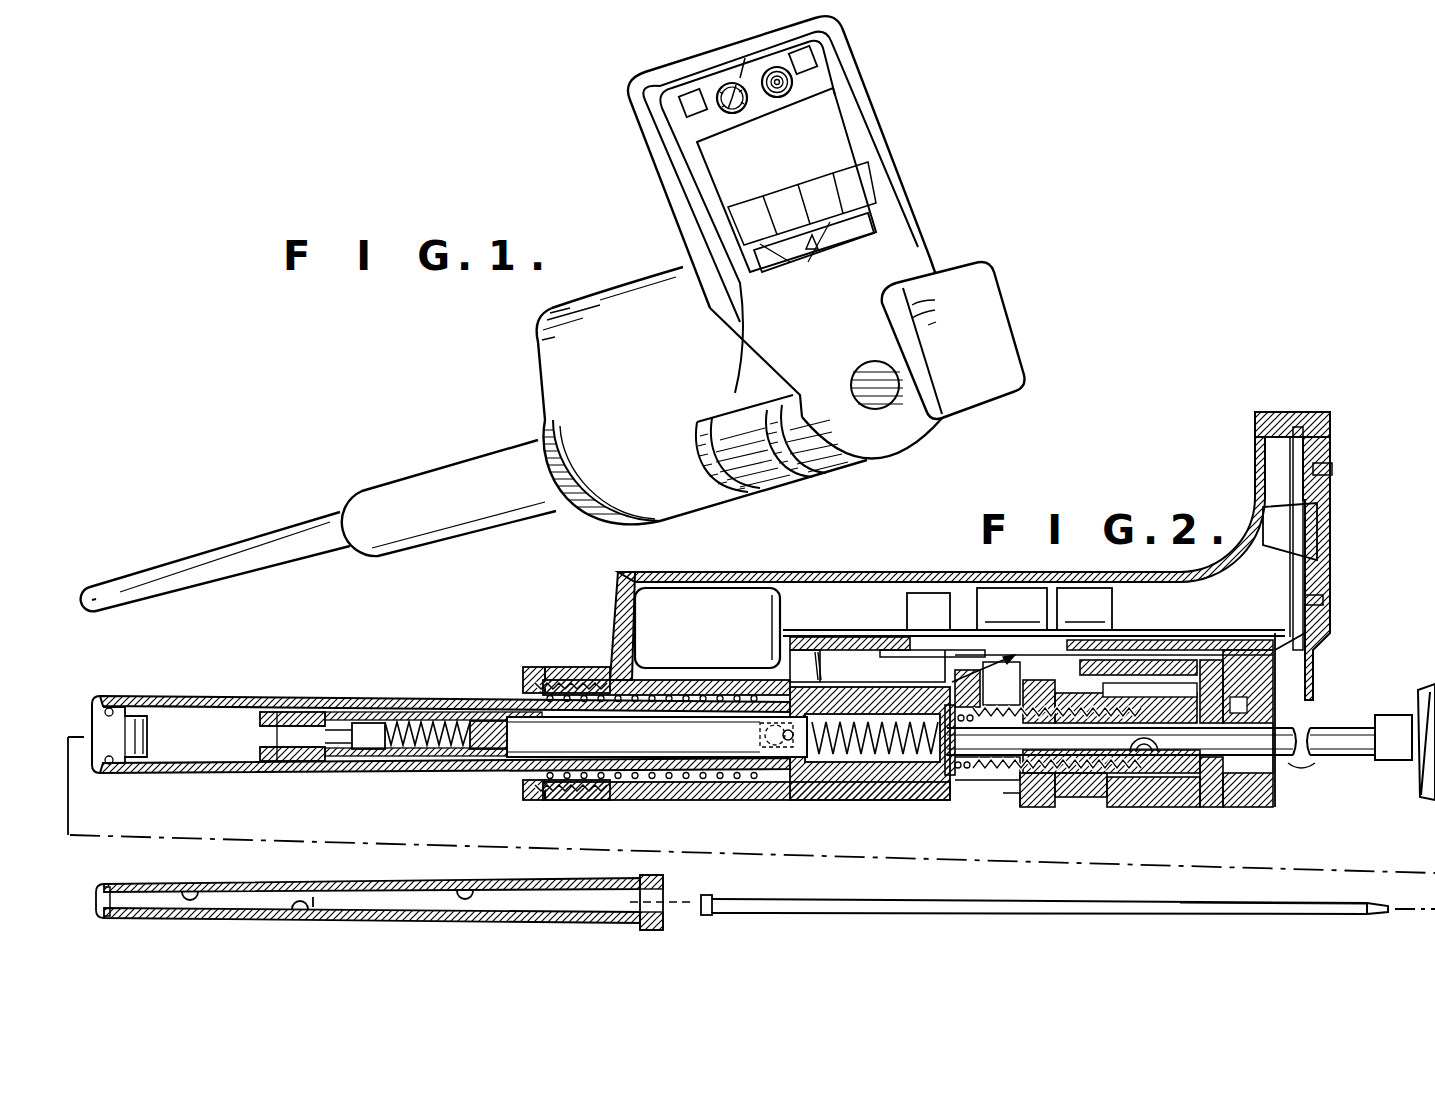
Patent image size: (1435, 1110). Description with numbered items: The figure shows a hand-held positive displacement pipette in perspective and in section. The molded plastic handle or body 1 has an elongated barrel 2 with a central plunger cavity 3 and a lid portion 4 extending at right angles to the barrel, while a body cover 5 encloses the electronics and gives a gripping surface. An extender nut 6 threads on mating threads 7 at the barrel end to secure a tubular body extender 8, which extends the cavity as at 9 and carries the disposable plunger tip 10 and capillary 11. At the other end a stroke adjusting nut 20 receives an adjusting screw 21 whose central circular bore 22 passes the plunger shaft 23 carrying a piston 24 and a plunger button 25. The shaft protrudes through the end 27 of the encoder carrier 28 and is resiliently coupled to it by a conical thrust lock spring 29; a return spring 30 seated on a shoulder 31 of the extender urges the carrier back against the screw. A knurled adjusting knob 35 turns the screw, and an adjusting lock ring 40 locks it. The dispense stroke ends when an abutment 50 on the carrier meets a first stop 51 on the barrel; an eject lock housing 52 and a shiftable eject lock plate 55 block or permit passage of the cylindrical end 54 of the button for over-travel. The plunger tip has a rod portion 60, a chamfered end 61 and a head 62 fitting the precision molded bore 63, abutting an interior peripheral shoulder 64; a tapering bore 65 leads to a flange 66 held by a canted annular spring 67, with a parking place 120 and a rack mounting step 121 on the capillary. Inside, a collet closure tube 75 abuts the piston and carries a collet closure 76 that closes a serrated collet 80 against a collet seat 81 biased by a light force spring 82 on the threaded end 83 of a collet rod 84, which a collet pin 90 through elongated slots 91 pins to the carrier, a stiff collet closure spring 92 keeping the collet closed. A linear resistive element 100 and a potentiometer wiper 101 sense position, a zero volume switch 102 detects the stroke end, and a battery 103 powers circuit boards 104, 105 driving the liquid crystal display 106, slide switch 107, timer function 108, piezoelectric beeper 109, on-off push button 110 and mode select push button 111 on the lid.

In FIG. 1, the handle or body 1 is at (512, 340).
In FIG. 1, the barrel 2 is at (687, 500).
In FIG. 2, the barrel 2 is at (738, 790).
In FIG. 2, the central plunger cavity 3 is at (720, 778).
In FIG. 1, the lid portion 4 is at (907, 208).
In FIG. 2, the lid portion 4 is at (1315, 600).
In FIG. 1, the body cover 5 is at (615, 293).
In FIG. 2, the body cover 5 is at (840, 574).
In FIG. 2, the extender nut 6 is at (540, 668).
In FIG. 2, the mating threads 7 is at (575, 668).
In FIG. 1, the body extender 8 is at (437, 482).
In FIG. 2, the body extender 8 is at (210, 697).
In FIG. 2, the extended plunger cavity 9 is at (181, 751).
In FIG. 2, the plunger tip 10 is at (797, 899).
In FIG. 1, the capillary 11 is at (222, 555).
In FIG. 2, the capillary 11 is at (262, 886).
In FIG. 2, the stroke adjusting nut 20 is at (1030, 808).
In FIG. 2, the adjusting screw 21 is at (1110, 772).
In FIG. 2, the central circular bore 22 is at (1160, 777).
In FIG. 2, the plunger shaft 23 is at (1353, 758).
In FIG. 2, the piston 24 is at (948, 762).
In FIG. 1, the plunger button 25 is at (995, 307).
In FIG. 2, the plunger button 25 is at (1418, 765).
In FIG. 2, the end of encoder carrier 27 is at (975, 770).
In FIG. 2, the encoder carrier 28 is at (850, 775).
In FIG. 2, the conical thrust lock spring 29 is at (960, 768).
In FIG. 2, the return spring 30 is at (630, 778).
In FIG. 2, the shoulder 31 is at (543, 790).
In FIG. 2, the knurled adjusting knob 35 is at (1147, 808).
In FIG. 2, the adjusting lock ring 40 is at (1072, 808).
In FIG. 2, the abutment 50 is at (944, 702).
In FIG. 2, the first stop 51 is at (811, 676).
In FIG. 2, the eject lock housing 52 is at (1210, 795).
In FIG. 2, the cylindrical end of plunger button 54 is at (1397, 715).
In FIG. 2, the eject lock plate 55 is at (1262, 808).
In FIG. 2, the rod portion 60 is at (1230, 914).
In FIG. 2, the chamfered end 61 is at (1385, 914).
In FIG. 2, the plunger tip head 62 is at (704, 916).
In FIG. 2, the precision molded bore 63 is at (190, 888).
In FIG. 2, the interior peripheral shoulder 64 is at (108, 886).
In FIG. 2, the tapering bore 65 is at (455, 892).
In FIG. 2, the flange 66 is at (640, 924).
In FIG. 2, the canted annular spring 67 is at (110, 705).
In FIG. 2, the collet closure tube 75 is at (432, 712).
In FIG. 2, the collet closure 76 is at (307, 712).
In FIG. 2, the serrated collet 80 is at (350, 750).
In FIG. 2, the collet seat 81 is at (367, 727).
In FIG. 2, the light force spring 82 is at (420, 745).
In FIG. 2, the threaded end of collet rod 83 is at (482, 750).
In FIG. 2, the collet rod 84 is at (647, 752).
In FIG. 2, the collet pin 90 is at (788, 742).
In FIG. 2, the elongated slots 91 is at (882, 670).
In FIG. 2, the collet closure spring 92 is at (895, 750).
In FIG. 2, the linear resistive element 100 is at (931, 662).
In FIG. 2, the potentiometer wiper 101 is at (986, 680).
In FIG. 2, the zero volume switch 102 is at (822, 662).
In FIG. 2, the battery 103 is at (721, 645).
In FIG. 2, the circuit board 104 is at (872, 630).
In FIG. 2, the circuit board 105 is at (1285, 598).
In FIG. 1, the liquid crystal display 106 is at (828, 107).
In FIG. 1, the slide switch 107 is at (868, 248).
In FIG. 1, the timer function 108 is at (727, 84).
In FIG. 1, the piezoelectric beeper 109 is at (770, 67).
In FIG. 1, the on-off push button 110 is at (815, 52).
In FIG. 1, the mode select push button 111 is at (683, 100).
In FIG. 2, the parking place 120 is at (298, 905).
In FIG. 2, the rack mounting step 121 is at (582, 927).